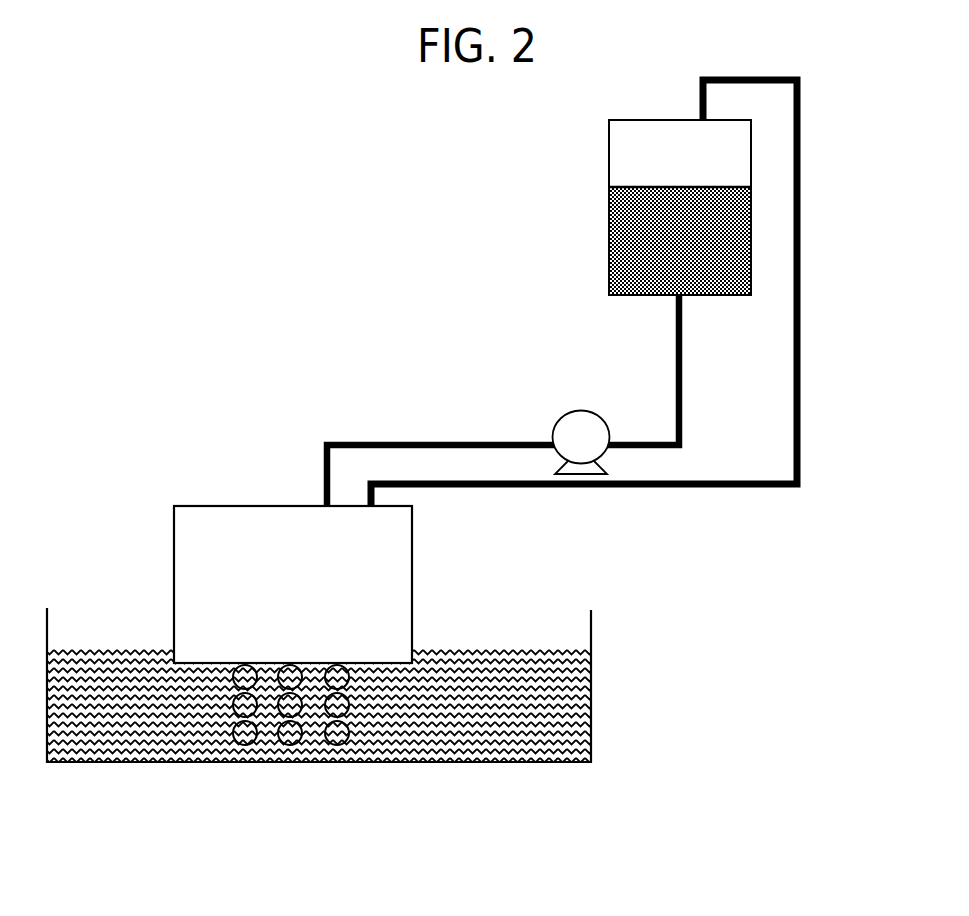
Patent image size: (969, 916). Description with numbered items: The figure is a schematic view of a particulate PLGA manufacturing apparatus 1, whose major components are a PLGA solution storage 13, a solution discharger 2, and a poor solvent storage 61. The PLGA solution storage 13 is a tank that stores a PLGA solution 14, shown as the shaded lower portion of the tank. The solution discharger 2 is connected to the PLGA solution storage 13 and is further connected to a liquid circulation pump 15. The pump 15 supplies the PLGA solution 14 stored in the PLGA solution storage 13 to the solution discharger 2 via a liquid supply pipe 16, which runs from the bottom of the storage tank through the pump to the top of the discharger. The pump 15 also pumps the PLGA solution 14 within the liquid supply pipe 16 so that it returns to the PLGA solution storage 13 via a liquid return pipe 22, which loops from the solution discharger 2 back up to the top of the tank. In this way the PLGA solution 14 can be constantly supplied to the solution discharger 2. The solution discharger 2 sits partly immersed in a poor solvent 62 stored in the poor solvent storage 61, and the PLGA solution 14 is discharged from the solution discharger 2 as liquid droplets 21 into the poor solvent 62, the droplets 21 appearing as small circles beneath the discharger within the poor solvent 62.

The particulate PLGA manufacturing apparatus 1 is at (122, 246).
The solution discharger 2 is at (413, 520).
The PLGA solution storage 13 is at (608, 160).
The PLGA solution 14 is at (609, 246).
The liquid circulation pump 15 is at (582, 410).
The liquid supply pipe 16 is at (675, 334).
The liquid droplets 21 is at (291, 736).
The liquid return pipe 22 is at (801, 92).
The poor solvent storage 61 is at (593, 703).
The poor solvent 62 is at (540, 736).